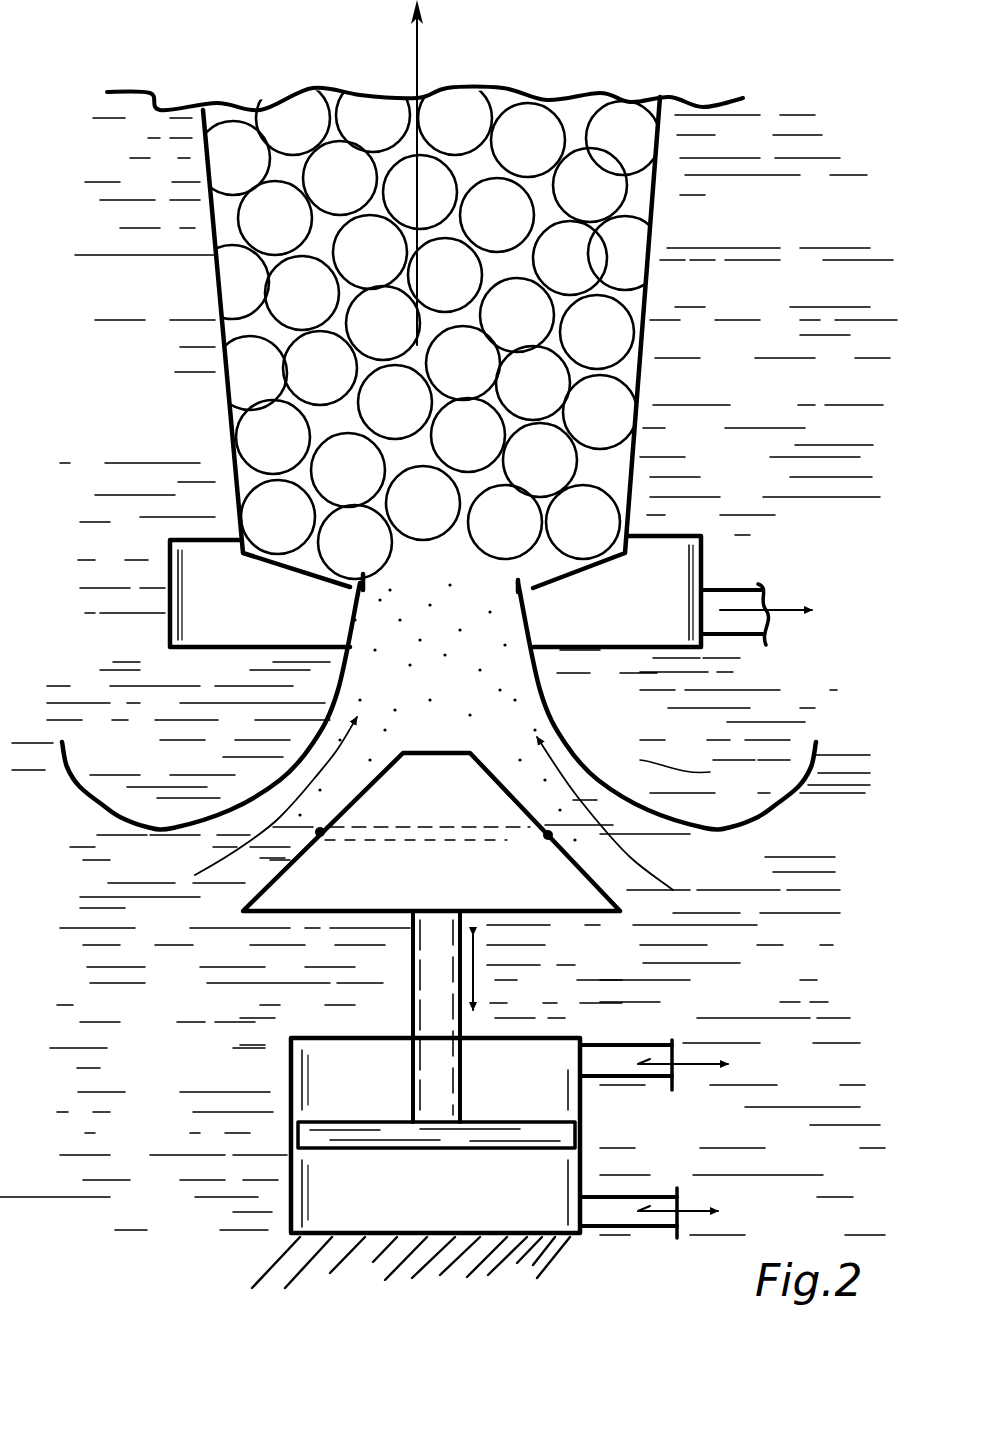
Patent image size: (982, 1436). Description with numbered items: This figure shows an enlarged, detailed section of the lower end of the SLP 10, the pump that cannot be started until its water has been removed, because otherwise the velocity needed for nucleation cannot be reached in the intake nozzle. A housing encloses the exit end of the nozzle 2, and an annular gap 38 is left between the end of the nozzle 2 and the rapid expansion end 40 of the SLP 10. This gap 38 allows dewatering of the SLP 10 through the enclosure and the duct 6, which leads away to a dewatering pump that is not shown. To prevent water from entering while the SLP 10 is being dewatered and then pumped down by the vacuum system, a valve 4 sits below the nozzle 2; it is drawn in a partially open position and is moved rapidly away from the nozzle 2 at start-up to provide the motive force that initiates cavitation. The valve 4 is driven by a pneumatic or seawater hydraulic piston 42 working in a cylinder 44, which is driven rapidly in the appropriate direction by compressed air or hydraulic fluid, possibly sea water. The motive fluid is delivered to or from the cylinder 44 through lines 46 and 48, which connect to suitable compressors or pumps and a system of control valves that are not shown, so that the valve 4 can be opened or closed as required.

The SLP 10 is at (658, 240).
The rapid expansion end 40 is at (580, 578).
The annular gap 38 is at (533, 600).
The duct 6 is at (747, 640).
The nozzle 2 is at (570, 707).
The valve 4 is at (600, 877).
The cylinder 44 is at (503, 1028).
The line 46 is at (640, 1037).
The piston 42 is at (547, 1135).
The line 48 is at (660, 1188).